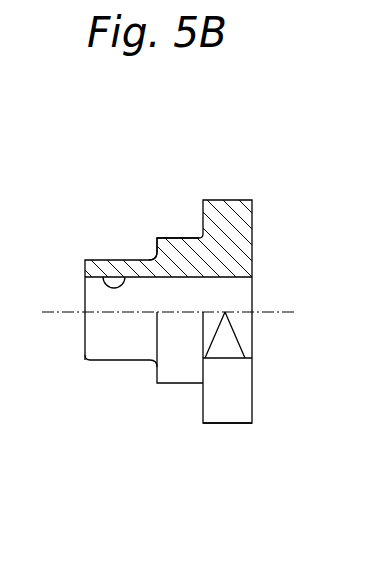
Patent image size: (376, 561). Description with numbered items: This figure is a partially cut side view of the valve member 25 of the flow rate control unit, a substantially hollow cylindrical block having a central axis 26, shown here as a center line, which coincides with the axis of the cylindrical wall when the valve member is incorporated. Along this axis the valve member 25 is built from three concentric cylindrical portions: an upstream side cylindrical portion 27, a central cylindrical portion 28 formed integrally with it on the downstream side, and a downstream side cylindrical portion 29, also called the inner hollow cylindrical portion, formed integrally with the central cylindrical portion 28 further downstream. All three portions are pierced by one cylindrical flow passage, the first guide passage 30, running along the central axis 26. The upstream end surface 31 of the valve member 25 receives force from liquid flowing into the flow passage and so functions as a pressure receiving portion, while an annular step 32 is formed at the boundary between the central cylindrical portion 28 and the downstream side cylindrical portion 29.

The valve member 25 is at (253, 201).
The central axis 26 is at (57, 310).
The upstream side cylindrical portion 27 is at (223, 424).
The central cylindrical portion 28 is at (177, 384).
The downstream side cylindrical portion 29 is at (115, 361).
The first guide passage 30 is at (103, 280).
The upstream end surface 31 is at (252, 390).
The annular step 32 is at (156, 251).